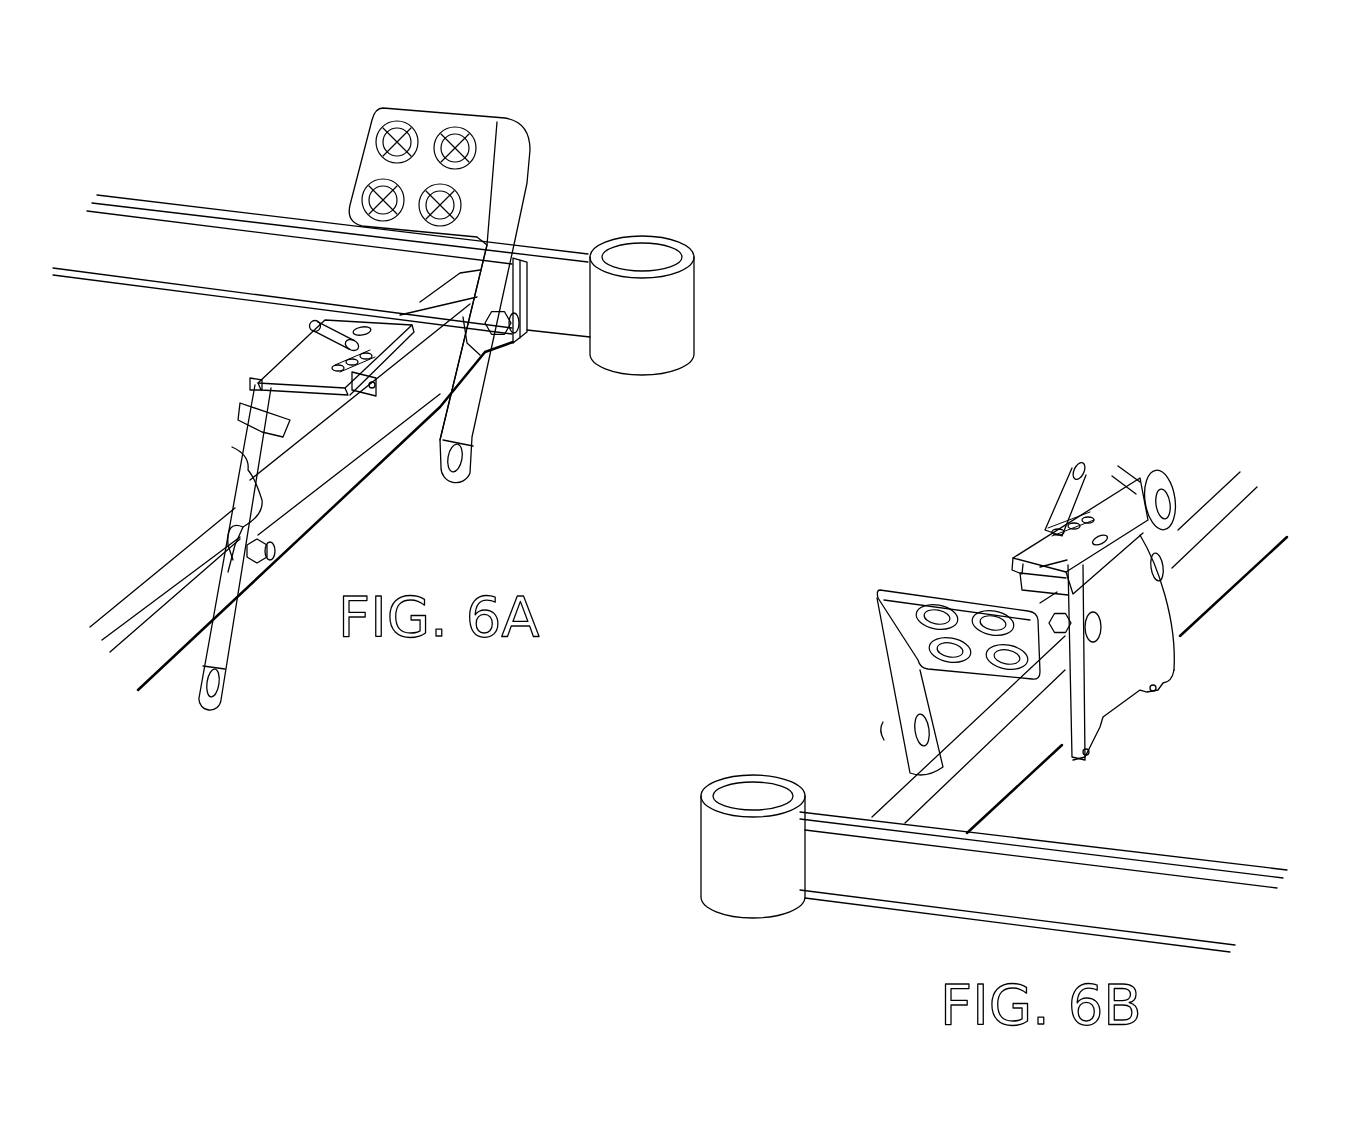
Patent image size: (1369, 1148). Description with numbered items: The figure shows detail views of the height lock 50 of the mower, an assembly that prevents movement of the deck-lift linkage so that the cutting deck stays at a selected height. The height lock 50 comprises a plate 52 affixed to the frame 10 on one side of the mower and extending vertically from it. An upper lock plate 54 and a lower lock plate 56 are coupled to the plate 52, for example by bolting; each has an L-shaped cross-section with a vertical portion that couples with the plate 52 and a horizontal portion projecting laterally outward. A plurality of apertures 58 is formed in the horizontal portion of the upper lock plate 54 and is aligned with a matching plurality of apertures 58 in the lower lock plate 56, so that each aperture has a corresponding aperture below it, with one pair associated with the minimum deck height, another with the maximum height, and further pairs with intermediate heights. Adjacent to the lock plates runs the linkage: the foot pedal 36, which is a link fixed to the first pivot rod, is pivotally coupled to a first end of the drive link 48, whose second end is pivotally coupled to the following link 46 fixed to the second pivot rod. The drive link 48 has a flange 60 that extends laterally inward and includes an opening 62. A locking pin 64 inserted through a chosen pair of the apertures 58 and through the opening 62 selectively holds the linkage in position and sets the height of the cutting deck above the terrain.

In FIG. 6A, the frame 10 is at (197, 240).
In FIG. 6B, the frame 10 is at (1250, 548).
In FIG. 6A, the foot pedal 36 is at (513, 180).
In FIG. 6B, the foot pedal 36 is at (893, 667).
In FIG. 6A, the following link 46 is at (223, 640).
In FIG. 6B, the following link 46 is at (1175, 513).
In FIG. 6A, the drive link 48 is at (307, 483).
In FIG. 6B, the drive link 48 is at (1125, 492).
In FIG. 6A, the height lock 50 is at (264, 363).
In FIG. 6B, the height lock 50 is at (1013, 503).
In FIG. 6A, the plate 52 is at (243, 483).
In FIG. 6B, the plate 52 is at (1117, 687).
In FIG. 6A, the upper lock plate 54 is at (362, 328).
In FIG. 6B, the upper lock plate 54 is at (1097, 534).
In FIG. 6A, the lower lock plate 56 is at (275, 432).
In FIG. 6B, the lower lock plate 56 is at (1073, 748).
In FIG. 6A, the plurality of apertures 58 is at (300, 357).
In FIG. 6B, the plurality of apertures 58 is at (1175, 640).
In FIG. 6A, the flange 60 is at (250, 384).
In FIG. 6B, the flange 60 is at (1013, 563).
In FIG. 6A, the opening 62 is at (364, 371).
In FIG. 6B, the opening 62 is at (1047, 589).
In FIG. 6A, the locking pin 64 is at (327, 323).
In FIG. 6B, the locking pin 64 is at (1053, 485).